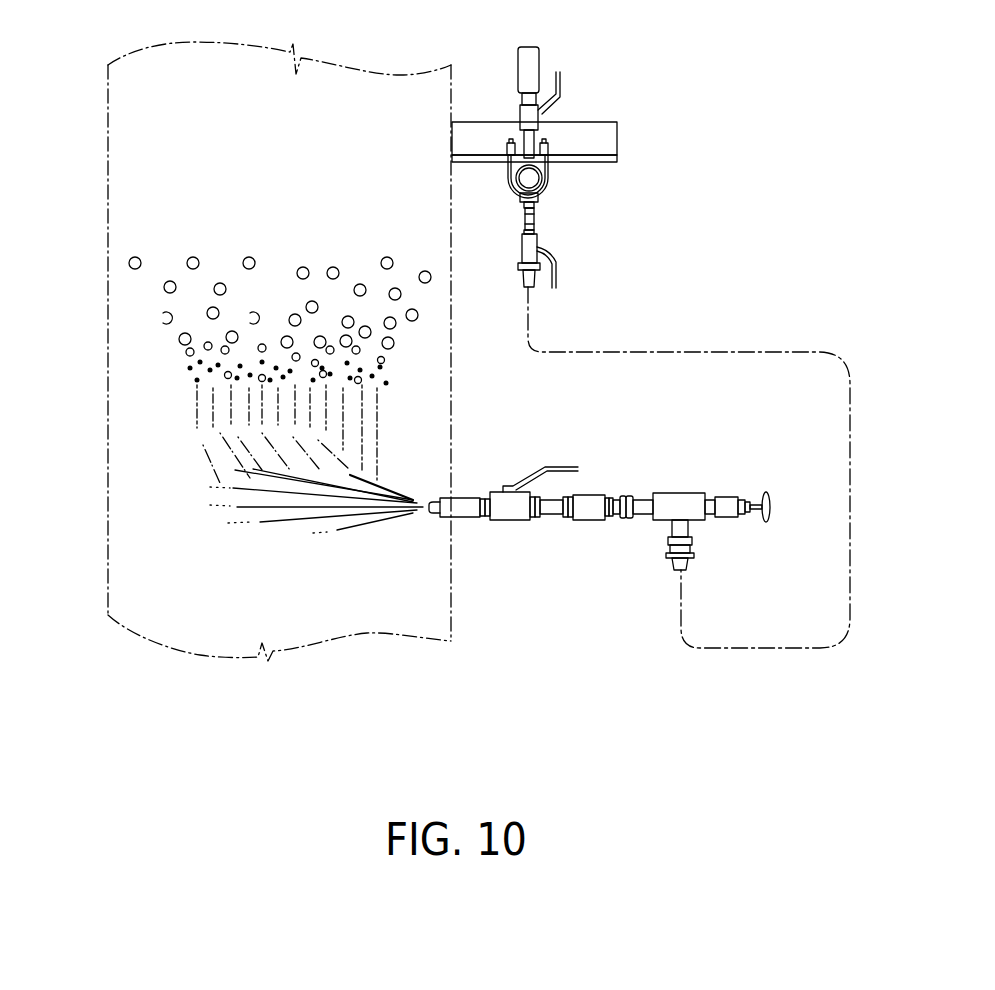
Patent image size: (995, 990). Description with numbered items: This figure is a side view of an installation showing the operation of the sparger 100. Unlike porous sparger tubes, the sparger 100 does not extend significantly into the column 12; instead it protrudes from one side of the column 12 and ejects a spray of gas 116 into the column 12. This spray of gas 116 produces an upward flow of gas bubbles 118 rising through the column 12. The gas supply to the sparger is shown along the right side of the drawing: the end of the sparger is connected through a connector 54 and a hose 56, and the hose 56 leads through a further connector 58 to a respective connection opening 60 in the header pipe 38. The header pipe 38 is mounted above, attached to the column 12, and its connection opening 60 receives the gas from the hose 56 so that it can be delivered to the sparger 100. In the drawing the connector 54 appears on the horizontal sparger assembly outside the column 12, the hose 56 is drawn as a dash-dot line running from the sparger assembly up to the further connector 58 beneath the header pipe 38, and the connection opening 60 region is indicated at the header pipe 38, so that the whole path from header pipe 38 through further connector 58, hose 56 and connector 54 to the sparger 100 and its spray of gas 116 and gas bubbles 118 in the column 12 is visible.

The column 12 is at (108, 397).
The gas bubbles 118 is at (175, 333).
The spray of gas 116 is at (237, 507).
The sparger 100 is at (428, 514).
The connector 54 is at (512, 514).
The hose 56 is at (852, 455).
The header pipe 38 is at (531, 177).
The further connector 58 is at (535, 219).
The connection opening 60 is at (536, 167).